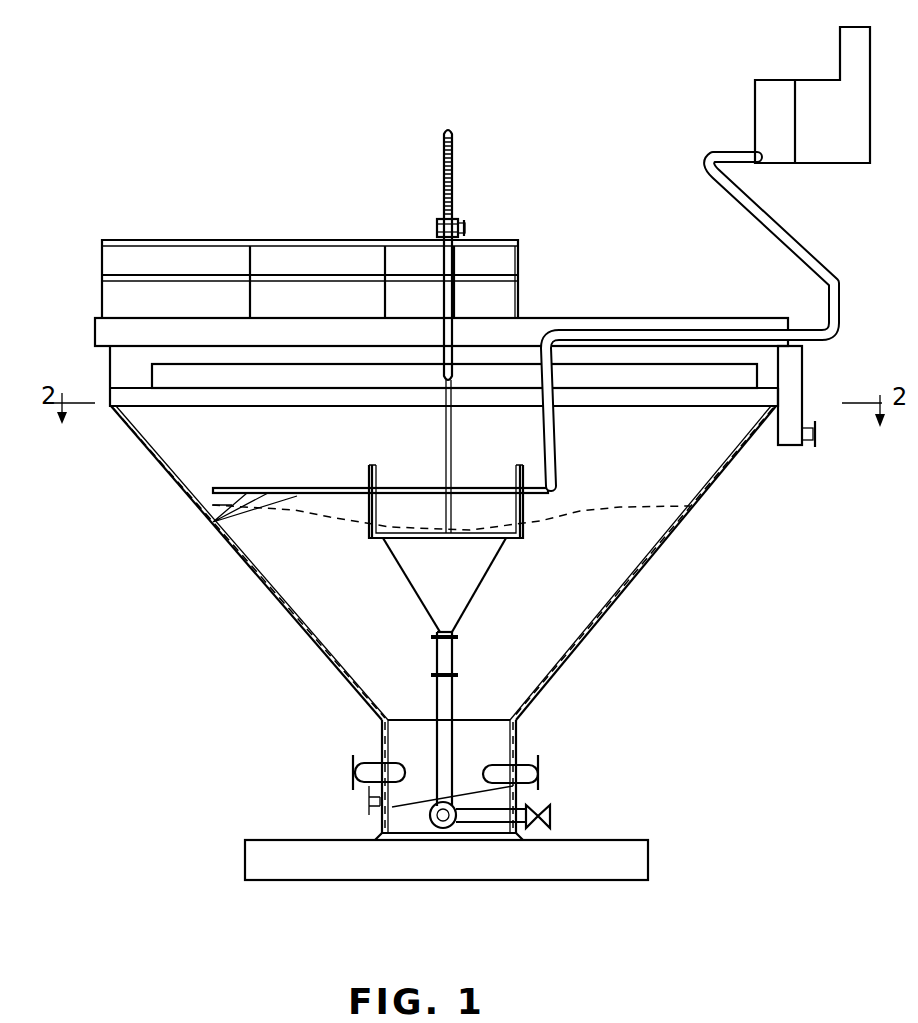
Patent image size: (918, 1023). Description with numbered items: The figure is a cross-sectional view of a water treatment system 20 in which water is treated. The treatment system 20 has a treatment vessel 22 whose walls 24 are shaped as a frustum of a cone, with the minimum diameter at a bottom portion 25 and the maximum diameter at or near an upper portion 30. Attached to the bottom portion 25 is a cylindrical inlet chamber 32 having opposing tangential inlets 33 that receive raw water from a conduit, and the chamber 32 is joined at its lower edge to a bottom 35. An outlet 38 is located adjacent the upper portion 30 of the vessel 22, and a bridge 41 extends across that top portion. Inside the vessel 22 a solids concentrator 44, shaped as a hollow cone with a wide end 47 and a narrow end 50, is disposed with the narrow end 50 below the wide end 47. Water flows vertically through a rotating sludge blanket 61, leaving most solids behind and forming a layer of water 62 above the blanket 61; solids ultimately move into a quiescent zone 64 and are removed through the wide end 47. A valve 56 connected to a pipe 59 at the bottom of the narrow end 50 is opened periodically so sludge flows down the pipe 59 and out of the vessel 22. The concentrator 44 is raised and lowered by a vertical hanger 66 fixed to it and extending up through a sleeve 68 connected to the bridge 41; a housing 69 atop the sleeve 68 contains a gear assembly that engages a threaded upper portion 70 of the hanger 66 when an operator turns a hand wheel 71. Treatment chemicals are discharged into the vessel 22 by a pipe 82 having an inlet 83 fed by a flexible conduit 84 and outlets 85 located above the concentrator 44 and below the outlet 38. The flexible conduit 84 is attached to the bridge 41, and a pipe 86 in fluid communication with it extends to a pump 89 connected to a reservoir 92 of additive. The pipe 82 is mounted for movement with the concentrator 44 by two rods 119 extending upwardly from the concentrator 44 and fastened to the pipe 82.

The water treatment system 20 is at (448, 563).
The treatment vessel 22 is at (426, 563).
The walls 24 is at (607, 612).
The bottom portion 25 is at (380, 722).
The upper portion 30 is at (143, 445).
The cylindrical inlet chamber 32 is at (382, 744).
The tangential inlets 33 is at (352, 775).
The bottom 35 is at (522, 838).
The outlet 38 is at (767, 356).
The bridge 41 is at (532, 318).
The solids concentrator 44 is at (482, 585).
The wide end 47 is at (400, 567).
The narrow end 50 is at (430, 618).
The valve 56 is at (553, 817).
The pipe 59 is at (454, 653).
The sludge blanket 61 is at (298, 512).
The layer of water 62 is at (508, 447).
The quiescent zone 64 is at (430, 478).
The vertical hanger 66 is at (444, 428).
The sleeve 68 is at (446, 267).
The housing 69 is at (437, 229).
The threaded upper portion 70 is at (455, 152).
The hand wheel 71 is at (466, 228).
The pipe 82 is at (235, 487).
The inlet 83 is at (553, 494).
The flexible conduit 84 is at (704, 321).
The outlets 85 is at (213, 522).
The pipe 86 is at (795, 233).
The pump 89 is at (781, 152).
The reservoir 92 is at (807, 86).
The rods 119 is at (367, 478).